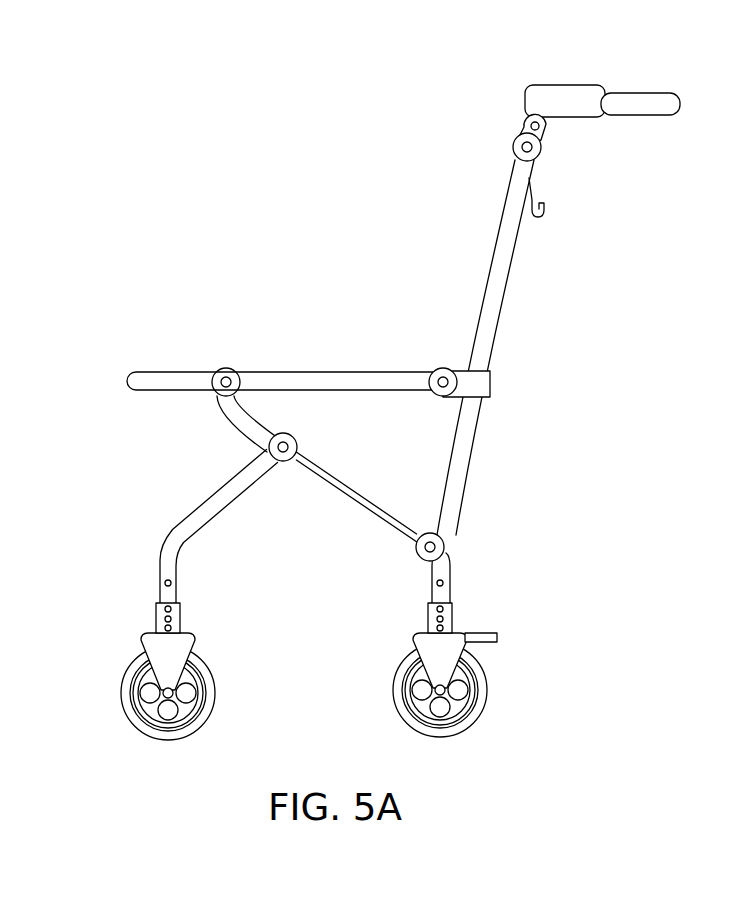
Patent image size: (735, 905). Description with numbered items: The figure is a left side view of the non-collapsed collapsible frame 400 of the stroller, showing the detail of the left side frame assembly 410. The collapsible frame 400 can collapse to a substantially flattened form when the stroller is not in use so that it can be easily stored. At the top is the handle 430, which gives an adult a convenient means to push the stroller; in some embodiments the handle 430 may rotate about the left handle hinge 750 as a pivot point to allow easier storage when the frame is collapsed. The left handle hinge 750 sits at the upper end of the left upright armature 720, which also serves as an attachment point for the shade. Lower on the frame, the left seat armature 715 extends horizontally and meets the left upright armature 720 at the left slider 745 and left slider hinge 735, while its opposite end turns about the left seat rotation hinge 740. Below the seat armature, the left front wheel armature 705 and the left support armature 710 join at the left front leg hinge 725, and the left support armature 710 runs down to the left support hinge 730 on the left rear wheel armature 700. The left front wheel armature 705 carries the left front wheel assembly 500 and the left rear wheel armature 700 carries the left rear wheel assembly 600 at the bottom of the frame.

The collapsible frame 400 is at (604, 59).
The left side frame assembly 410 is at (518, 72).
The handle 430 is at (670, 126).
The left front wheel assembly 500 is at (115, 630).
The left rear wheel assembly 600 is at (511, 623).
The left rear wheel armature 700 is at (463, 583).
The left front wheel armature 705 is at (195, 497).
The left support armature 710 is at (350, 528).
The left seat armature 715 is at (320, 360).
The left upright armature 720 is at (488, 213).
The left front leg hinge 725 is at (266, 475).
The left support hinge 730 is at (456, 545).
The left slider hinge 735 is at (438, 358).
The left seat rotation hinge 740 is at (224, 358).
The left slider 745 is at (502, 371).
The left handle hinge 750 is at (503, 133).